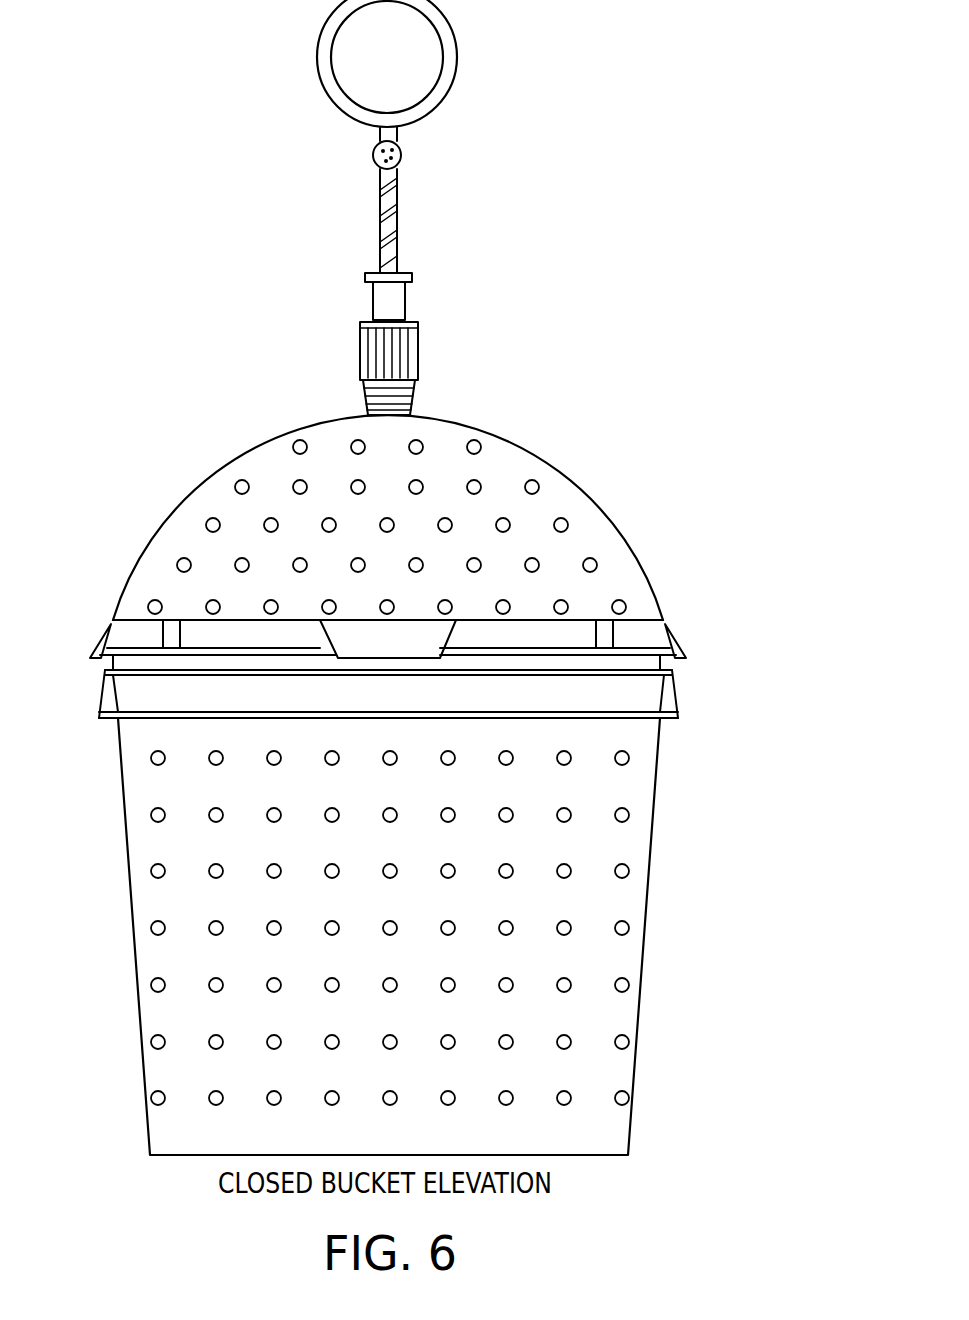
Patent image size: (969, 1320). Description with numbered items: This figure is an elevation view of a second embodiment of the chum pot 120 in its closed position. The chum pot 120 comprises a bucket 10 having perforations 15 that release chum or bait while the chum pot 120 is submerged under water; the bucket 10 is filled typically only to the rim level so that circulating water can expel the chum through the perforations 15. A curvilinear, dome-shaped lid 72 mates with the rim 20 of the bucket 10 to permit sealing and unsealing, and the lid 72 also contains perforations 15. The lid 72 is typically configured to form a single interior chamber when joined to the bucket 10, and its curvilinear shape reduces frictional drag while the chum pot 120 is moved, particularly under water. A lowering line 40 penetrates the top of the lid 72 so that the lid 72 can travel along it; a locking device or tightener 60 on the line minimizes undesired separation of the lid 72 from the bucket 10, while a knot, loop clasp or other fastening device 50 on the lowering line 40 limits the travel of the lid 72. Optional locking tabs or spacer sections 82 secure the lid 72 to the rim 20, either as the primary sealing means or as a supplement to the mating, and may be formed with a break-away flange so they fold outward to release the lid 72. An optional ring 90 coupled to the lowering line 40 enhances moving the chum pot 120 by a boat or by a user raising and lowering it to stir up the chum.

The bucket 10 is at (645, 955).
The perforations 15 is at (592, 560).
The rim 20 is at (678, 690).
The lowering line 40 is at (398, 222).
The knot or loop clasp or other fastening device 50 is at (402, 152).
The locking device or tightener 60 is at (420, 355).
The lid 72 is at (645, 572).
The locking tabs or spacer sections 82 is at (340, 635).
The ring 90 is at (458, 52).
The chum pot 120 is at (680, 508).